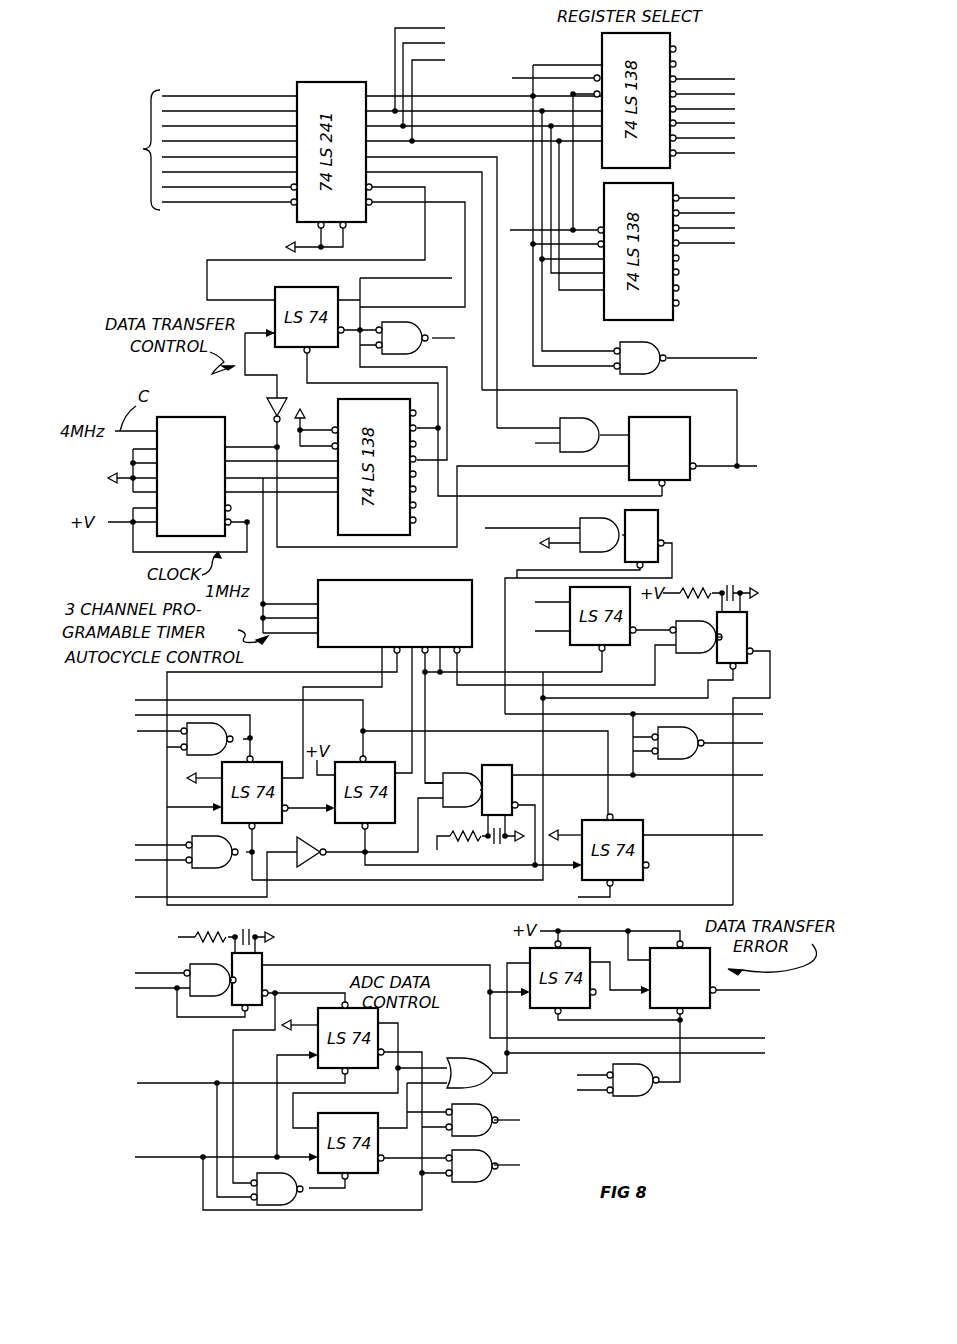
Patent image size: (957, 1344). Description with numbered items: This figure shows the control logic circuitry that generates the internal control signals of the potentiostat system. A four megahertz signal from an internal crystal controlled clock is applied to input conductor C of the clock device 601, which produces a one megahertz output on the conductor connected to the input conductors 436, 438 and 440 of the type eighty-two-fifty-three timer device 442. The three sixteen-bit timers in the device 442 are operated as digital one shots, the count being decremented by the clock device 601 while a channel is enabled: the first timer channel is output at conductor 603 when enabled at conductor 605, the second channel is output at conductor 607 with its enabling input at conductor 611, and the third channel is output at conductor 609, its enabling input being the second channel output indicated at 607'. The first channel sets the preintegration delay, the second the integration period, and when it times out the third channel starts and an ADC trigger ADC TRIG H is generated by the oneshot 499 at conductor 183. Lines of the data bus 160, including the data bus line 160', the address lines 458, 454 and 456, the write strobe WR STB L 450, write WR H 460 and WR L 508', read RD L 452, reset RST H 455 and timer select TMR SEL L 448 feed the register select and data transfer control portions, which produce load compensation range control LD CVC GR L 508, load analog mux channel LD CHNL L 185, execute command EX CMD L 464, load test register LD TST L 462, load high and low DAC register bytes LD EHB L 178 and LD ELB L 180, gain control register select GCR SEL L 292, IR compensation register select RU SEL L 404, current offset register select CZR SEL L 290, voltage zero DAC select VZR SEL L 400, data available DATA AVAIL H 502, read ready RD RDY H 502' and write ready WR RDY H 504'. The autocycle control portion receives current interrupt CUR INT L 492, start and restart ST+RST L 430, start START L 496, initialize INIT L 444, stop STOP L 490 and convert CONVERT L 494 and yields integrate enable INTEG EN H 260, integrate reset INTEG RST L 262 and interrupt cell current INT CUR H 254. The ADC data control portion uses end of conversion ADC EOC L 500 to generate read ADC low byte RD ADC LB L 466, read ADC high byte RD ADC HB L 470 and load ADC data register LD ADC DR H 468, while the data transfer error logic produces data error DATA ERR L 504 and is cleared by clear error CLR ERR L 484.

The data bus 160 is at (201, 150).
The address line A2 458 is at (445, 28).
The address line A1 454 is at (445, 43).
The address line A0 456 is at (445, 60).
The write strobe signal (WR STB L) 450 is at (520, 66).
The load compensation range control signal (LD CVC GR L) 508 is at (714, 65).
The load analog mux channel signal (LD CHNL L) 185 is at (736, 94).
The execute command signal (EX CMD L) 464 is at (736, 109).
The load test register signal (LD TST L) 462 is at (736, 123).
The load high byte of DAC register signal (LD EHB L) 178 is at (736, 138).
The load low byte of DAC register signal (LD ELB L) 180 is at (736, 153).
The gain control register select signal (GCR SEL L) 292 is at (734, 198).
The IR compensation register select signal (RU SEL L) 404 is at (736, 213).
The current offset register select signal (CZR SEL L) 290 is at (736, 228).
The voltage zero DAC select signal (VZR SEL L) 400 is at (736, 243).
The reset signal (RST H) 455 is at (527, 216).
The timer select signal (TMR SEL L) 448 is at (698, 358).
The write ready signal (WR RDY H) 504' is at (339, 242).
The write signal (WR H) 460 is at (452, 278).
The write signal (WR L) 508' is at (412, 254).
The clock device 601 is at (182, 417).
The timer input conductor 436 is at (275, 616).
The timer input conductor 438 is at (264, 588).
The timer input conductor 440 is at (292, 638).
The type 8253 timer device 442 is at (428, 582).
The read ready signal (RD RDY H) 502' is at (528, 412).
The data available signal (DATA AVAIL H) 502 is at (631, 757).
The read signal (RD L) 452 is at (746, 466).
The data bus line 160' is at (546, 593).
The start command signal (START L) 496 is at (556, 628).
The first timer channel enable conductor 605 is at (379, 674).
The first timer channel output conductor 603 is at (272, 674).
The third timer channel enable input 607' is at (437, 648).
The second timer channel enable conductor 611 is at (410, 692).
The second timer channel output conductor 607 is at (484, 730).
The third timer channel output conductor 609 is at (478, 688).
The current interrupt signal (CUR INT L) 492 is at (135, 700).
The start and restart signal (ST+RST L) 430 is at (135, 715).
The oneshot 499 is at (516, 766).
The integrate enable signal (INTEG EN H) 260 is at (758, 718).
The integrate reset signal (INTEG RST L) 262 is at (758, 746).
The ADC trigger conductor (ADC TRIG H) 183 is at (758, 780).
The interrupt cell current signal (INT CUR H) 254 is at (754, 835).
The initialize signal (INIT L) 444 is at (136, 845).
The stop command signal (STOP L) 490 is at (134, 860).
The ADC convert command signal (CONVERT L) 494 is at (135, 897).
The ADC end of conversion signal (ADC EOC L) 500 is at (136, 972).
The read ADC low byte signal (RD ADC LB L) 466 is at (530, 1102).
The read ADC high byte signal (RD ADC HB L) 470 is at (518, 1166).
The load ADC data register signal (LD ADC DR H) 468 is at (740, 1038).
The data error signal (DATA ERR L) 504 is at (725, 978).
The clear error signal (CLR ERR L) 484 is at (594, 1090).